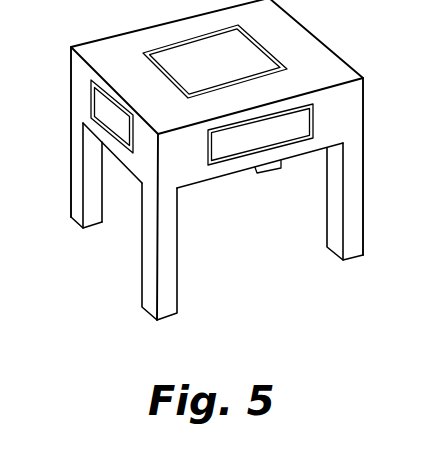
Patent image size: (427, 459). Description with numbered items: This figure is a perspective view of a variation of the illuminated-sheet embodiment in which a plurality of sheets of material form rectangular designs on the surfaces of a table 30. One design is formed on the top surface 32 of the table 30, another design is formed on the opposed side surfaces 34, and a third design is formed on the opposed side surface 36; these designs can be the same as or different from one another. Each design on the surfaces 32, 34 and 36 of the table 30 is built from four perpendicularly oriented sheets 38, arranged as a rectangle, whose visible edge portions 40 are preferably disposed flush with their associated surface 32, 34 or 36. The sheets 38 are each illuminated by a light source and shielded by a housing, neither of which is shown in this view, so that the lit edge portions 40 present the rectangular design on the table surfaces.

The table 30 is at (318, 32).
The top surface 32 is at (272, 26).
The opposed side surfaces 34 is at (352, 118).
The opposed side surface 36 is at (78, 78).
The sheets 38 is at (257, 49).
The visible edge portions 40 is at (213, 88).